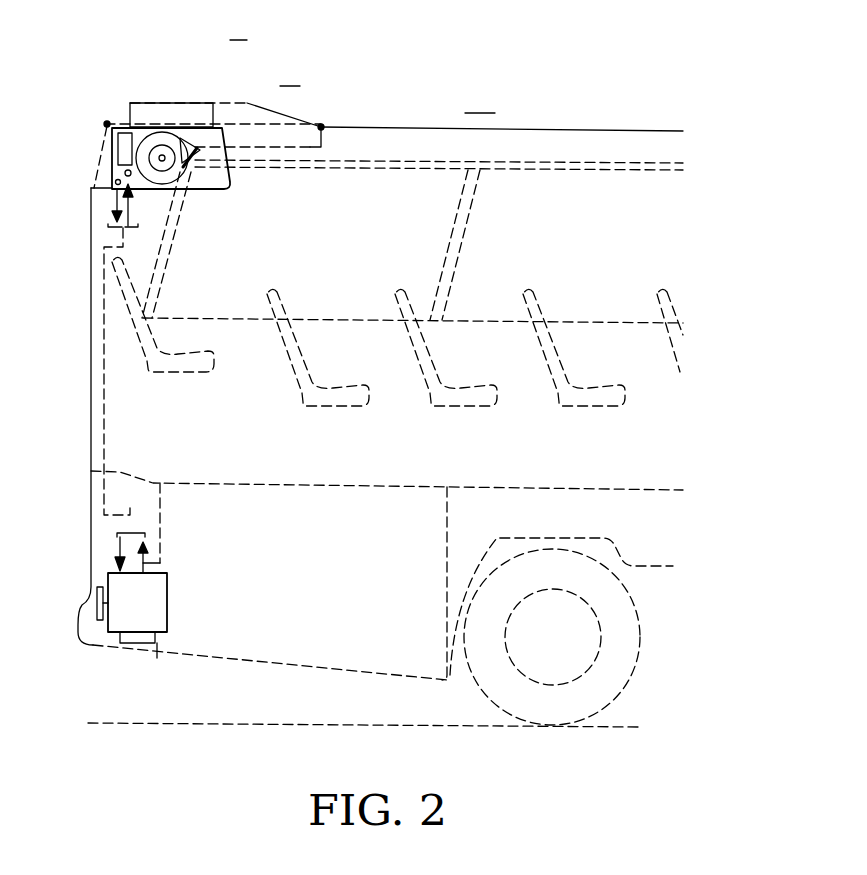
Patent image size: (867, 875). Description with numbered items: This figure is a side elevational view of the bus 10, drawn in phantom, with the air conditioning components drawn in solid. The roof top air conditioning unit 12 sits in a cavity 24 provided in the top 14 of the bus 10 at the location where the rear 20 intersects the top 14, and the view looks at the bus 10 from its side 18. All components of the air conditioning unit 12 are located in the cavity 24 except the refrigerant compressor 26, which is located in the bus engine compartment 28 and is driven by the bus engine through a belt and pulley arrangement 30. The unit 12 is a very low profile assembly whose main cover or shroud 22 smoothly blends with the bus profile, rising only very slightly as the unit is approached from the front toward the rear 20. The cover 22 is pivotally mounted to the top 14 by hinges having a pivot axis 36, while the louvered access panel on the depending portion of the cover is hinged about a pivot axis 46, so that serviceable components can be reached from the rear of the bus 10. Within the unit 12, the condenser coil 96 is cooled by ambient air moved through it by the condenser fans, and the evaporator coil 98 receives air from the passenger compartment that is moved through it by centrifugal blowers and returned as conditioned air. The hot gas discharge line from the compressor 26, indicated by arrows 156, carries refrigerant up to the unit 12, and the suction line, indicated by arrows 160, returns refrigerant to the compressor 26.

The bus 10 is at (480, 100).
The roof top air conditioning unit 12 is at (203, 60).
The top 14 is at (595, 130).
The side 18 is at (330, 664).
The rear 20 is at (91, 382).
The main cover or shroud 22 is at (262, 103).
The cavity 24 is at (93, 186).
The refrigerant compressor 26 is at (167, 594).
The bus engine compartment 28 is at (147, 511).
The belt and pulley arrangement 30 is at (97, 603).
The pivot axis 36 is at (321, 126).
The pivot axis 46 is at (107, 123).
The condenser coil 96 is at (112, 122).
The evaporator coil 98 is at (216, 189).
The hot gas discharge line 156 is at (134, 212).
The suction line 160 is at (117, 200).